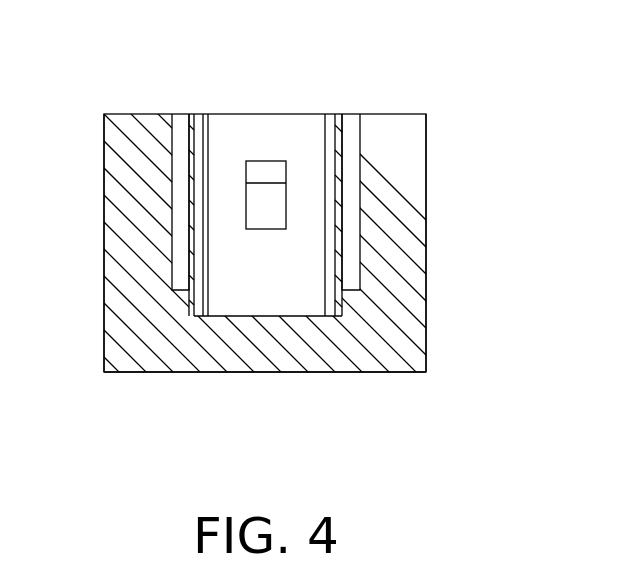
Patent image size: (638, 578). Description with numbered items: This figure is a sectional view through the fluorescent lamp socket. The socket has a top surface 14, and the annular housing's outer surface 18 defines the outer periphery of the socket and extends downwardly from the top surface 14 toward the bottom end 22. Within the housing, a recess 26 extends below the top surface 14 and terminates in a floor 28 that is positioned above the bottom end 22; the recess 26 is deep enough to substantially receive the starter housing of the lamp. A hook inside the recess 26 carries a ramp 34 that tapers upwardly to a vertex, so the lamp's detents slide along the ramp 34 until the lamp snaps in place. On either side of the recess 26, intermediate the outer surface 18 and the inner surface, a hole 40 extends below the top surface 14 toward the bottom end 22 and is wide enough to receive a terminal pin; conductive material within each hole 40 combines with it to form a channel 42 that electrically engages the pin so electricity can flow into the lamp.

The top surface 14 is at (390, 113).
The outer surface 18 is at (103, 237).
The bottom end 22 is at (323, 372).
The recess 26 is at (237, 272).
The floor 28 is at (246, 316).
The ramp 34 is at (264, 172).
The hole 40 is at (180, 114).
The channel 42 is at (180, 193).